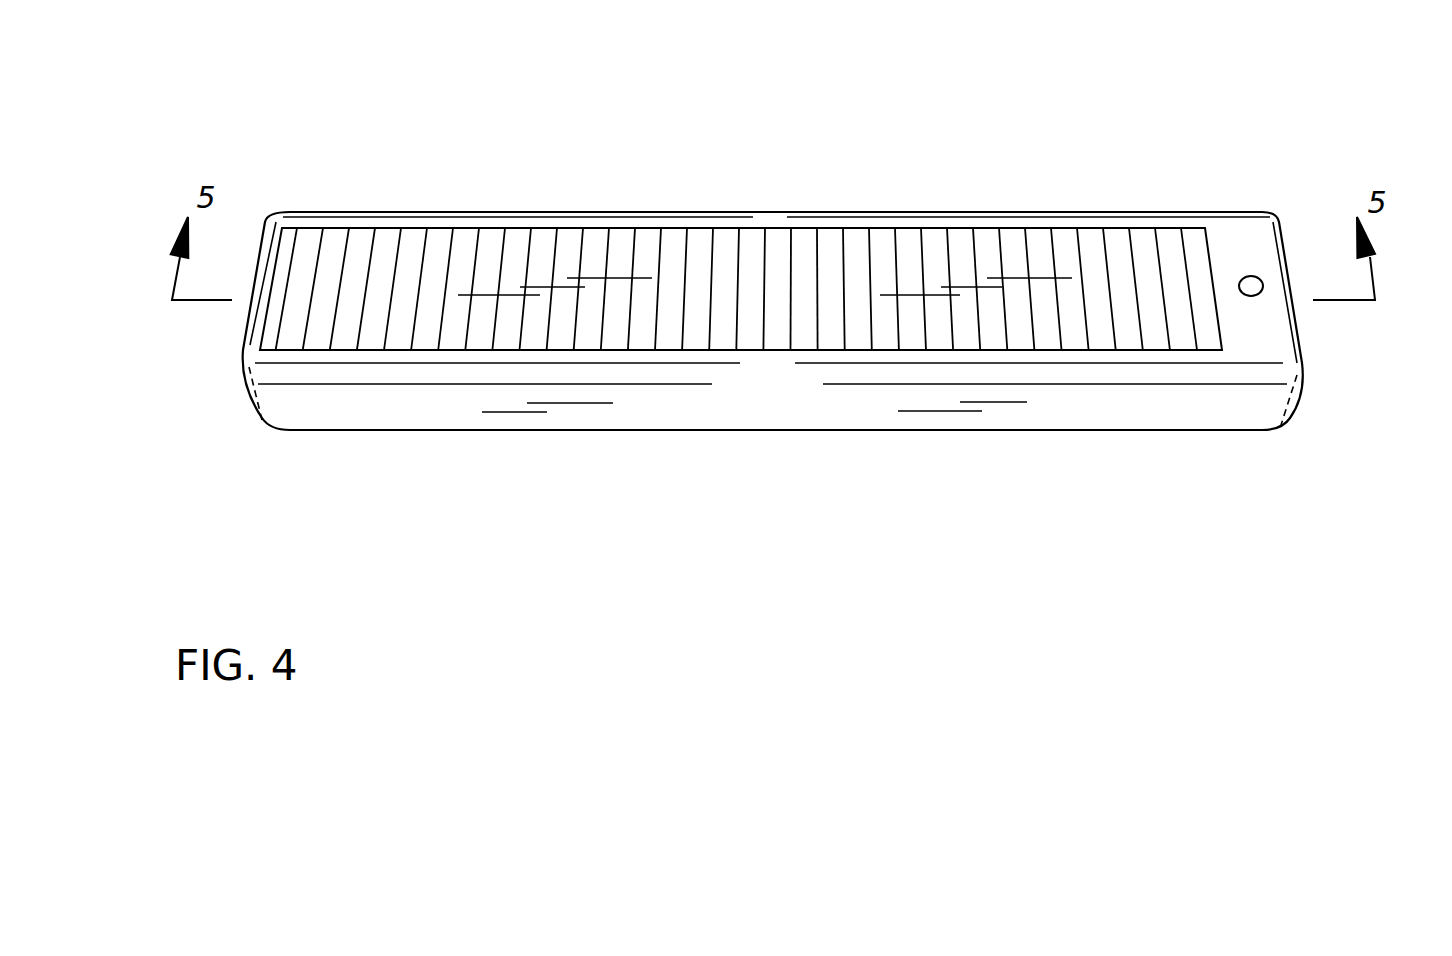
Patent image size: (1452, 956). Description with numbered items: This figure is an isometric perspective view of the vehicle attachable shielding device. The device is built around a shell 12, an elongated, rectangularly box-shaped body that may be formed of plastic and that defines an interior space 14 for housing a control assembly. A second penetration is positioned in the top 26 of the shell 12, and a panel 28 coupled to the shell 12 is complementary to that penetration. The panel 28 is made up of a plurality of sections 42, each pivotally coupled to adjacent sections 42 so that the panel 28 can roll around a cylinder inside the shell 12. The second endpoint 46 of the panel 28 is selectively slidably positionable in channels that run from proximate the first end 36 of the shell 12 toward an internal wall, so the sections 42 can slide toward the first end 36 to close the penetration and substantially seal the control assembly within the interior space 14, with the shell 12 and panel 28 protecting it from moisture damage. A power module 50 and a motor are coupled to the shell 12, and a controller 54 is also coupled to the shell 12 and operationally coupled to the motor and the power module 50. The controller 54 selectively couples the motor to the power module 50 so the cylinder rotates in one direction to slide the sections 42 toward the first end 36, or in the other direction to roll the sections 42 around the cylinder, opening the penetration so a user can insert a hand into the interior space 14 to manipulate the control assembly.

The shell 12 is at (1305, 378).
The interior space 14 is at (1016, 258).
The top 26 is at (1231, 245).
The panel 28 is at (508, 242).
The first end 36 is at (258, 242).
The sections 42 is at (622, 243).
The second endpoint 46 is at (276, 285).
The power module 50 is at (1243, 332).
The controller 54 is at (1257, 273).